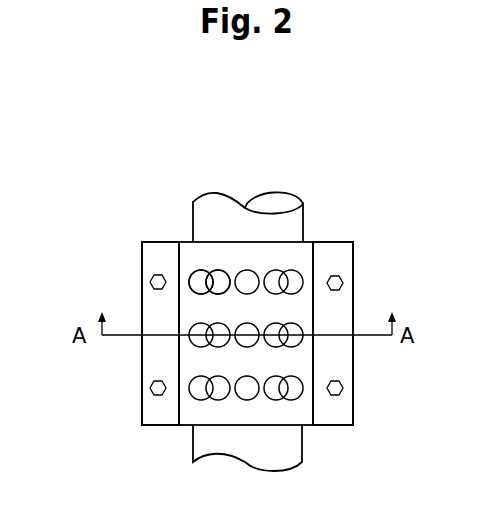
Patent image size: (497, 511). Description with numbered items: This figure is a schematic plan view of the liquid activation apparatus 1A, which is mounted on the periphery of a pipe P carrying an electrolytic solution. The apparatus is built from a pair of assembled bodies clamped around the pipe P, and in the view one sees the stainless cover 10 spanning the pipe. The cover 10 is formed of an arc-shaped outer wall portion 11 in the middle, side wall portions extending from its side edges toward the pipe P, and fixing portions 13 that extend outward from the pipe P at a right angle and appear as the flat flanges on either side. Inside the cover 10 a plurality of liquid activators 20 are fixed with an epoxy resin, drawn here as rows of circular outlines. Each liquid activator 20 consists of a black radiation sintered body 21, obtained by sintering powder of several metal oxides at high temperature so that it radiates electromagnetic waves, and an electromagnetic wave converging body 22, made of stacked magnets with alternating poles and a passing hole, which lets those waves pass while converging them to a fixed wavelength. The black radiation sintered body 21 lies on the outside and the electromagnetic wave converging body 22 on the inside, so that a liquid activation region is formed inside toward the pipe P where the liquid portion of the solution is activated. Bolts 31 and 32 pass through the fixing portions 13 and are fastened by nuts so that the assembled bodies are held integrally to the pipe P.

The liquid activation apparatus 1A is at (369, 182).
The pipe P is at (299, 218).
The cover 10 is at (333, 262).
The outer wall portion 11 is at (303, 355).
The fixing portions 13 is at (148, 298).
The liquid activator 20 is at (104, 166).
The black radiation sintered body 21 is at (218, 268).
The electromagnetic wave converging body 22 is at (203, 268).
The bolt 31 is at (150, 280).
The bolt 32 is at (343, 283).